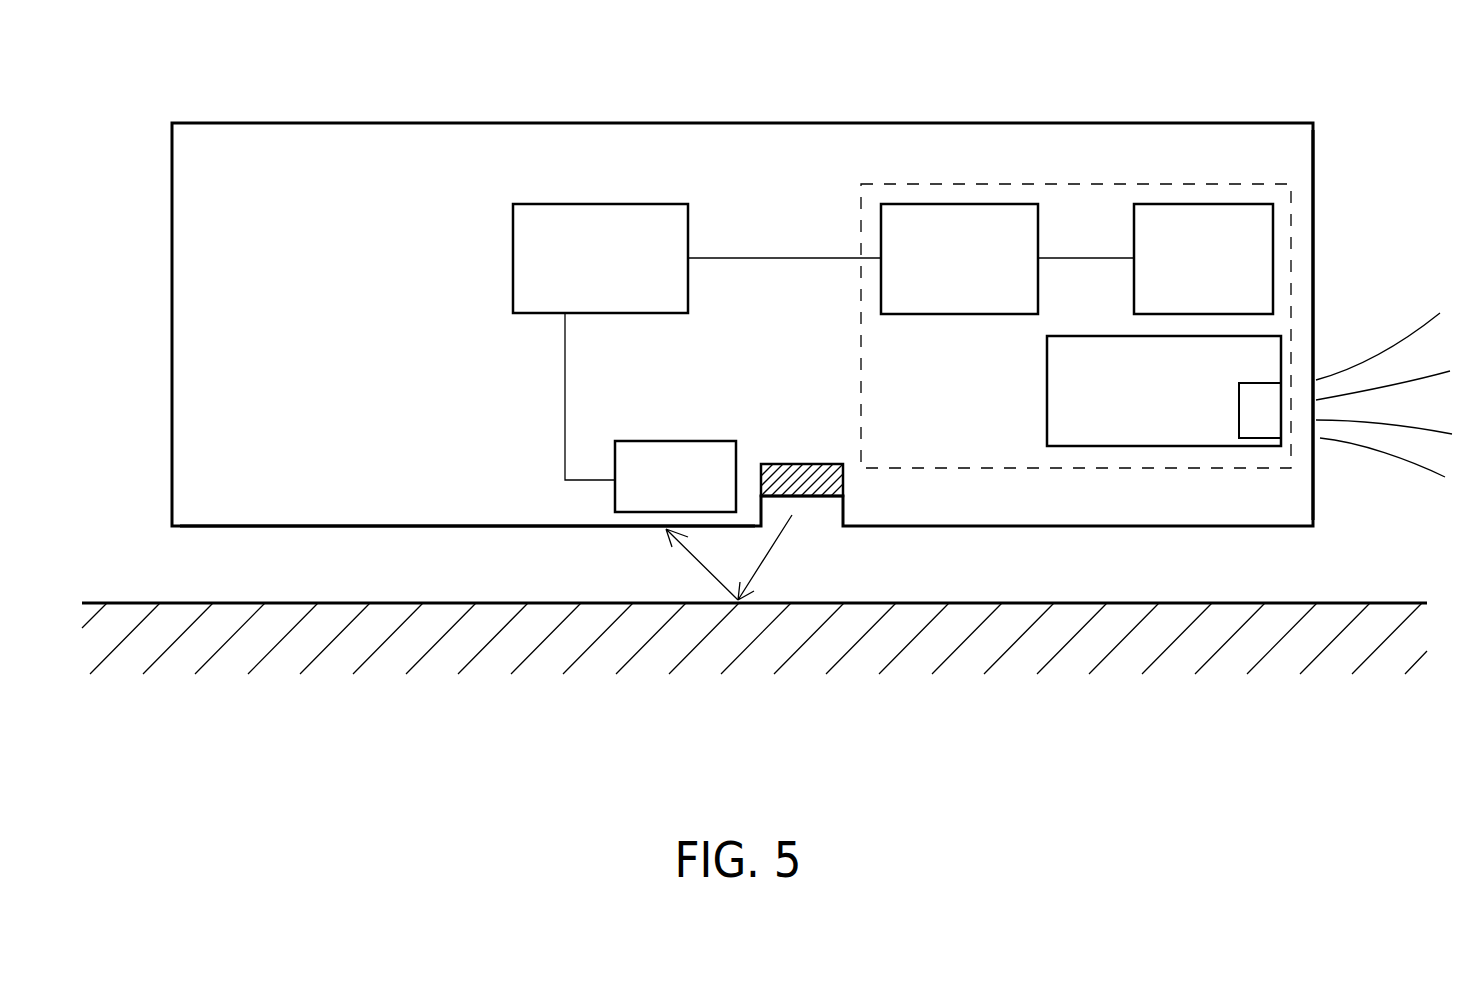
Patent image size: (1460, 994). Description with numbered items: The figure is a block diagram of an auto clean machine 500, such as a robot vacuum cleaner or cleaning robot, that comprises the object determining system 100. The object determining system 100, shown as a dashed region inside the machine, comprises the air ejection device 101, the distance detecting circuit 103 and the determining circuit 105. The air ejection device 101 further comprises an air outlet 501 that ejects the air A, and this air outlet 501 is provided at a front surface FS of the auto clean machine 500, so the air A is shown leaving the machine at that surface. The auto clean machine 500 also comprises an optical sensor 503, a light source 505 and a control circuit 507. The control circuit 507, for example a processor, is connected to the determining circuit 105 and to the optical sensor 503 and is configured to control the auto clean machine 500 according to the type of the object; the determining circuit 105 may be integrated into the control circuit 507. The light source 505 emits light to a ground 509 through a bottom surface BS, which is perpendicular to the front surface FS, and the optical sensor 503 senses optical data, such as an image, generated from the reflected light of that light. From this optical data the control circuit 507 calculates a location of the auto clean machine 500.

The auto clean machine 500 is at (1210, 70).
The front surface FS is at (1316, 155).
The bottom surface BS is at (253, 528).
The control circuit 507 is at (624, 204).
The object determining system 100 is at (861, 312).
The determining circuit 105 is at (985, 204).
The distance detecting circuit 103 is at (1204, 204).
The air ejection device 101 is at (1047, 400).
The air outlet 501 is at (1253, 425).
The air A is at (1384, 395).
The optical sensor 503 is at (689, 441).
The light source 505 is at (799, 464).
The ground 509 is at (402, 732).